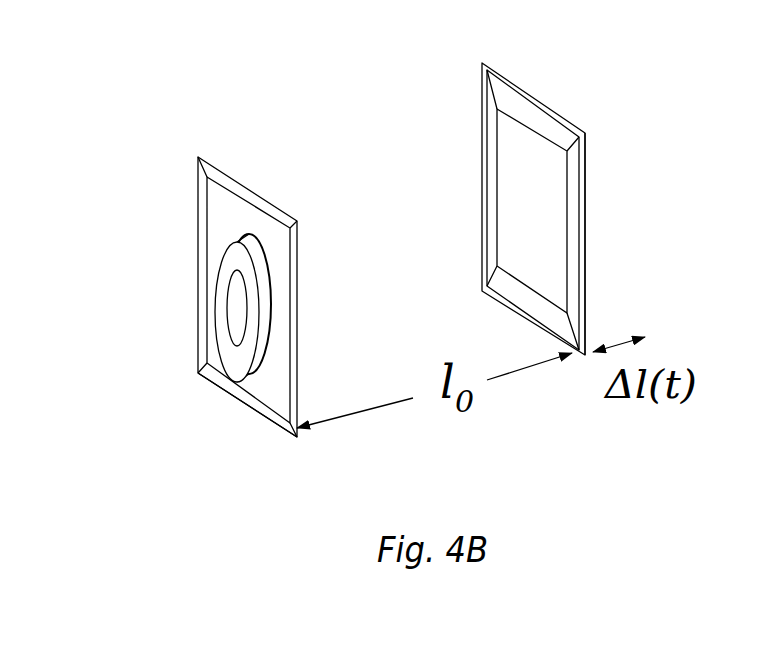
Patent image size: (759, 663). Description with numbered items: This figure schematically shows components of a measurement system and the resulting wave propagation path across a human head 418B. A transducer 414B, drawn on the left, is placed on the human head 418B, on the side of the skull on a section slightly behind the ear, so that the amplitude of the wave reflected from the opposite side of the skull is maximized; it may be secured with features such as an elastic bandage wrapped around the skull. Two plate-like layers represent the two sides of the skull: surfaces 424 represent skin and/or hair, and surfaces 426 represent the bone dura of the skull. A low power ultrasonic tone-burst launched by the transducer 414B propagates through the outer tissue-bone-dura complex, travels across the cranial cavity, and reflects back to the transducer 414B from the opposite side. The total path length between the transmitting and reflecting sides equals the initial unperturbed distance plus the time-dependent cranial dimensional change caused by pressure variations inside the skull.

The surfaces representing skin and/or hair 424 is at (185, 146).
The surfaces representing bone dura of the skull 426 is at (515, 165).
The human head 418B is at (258, 407).
The transducer 414B is at (233, 281).